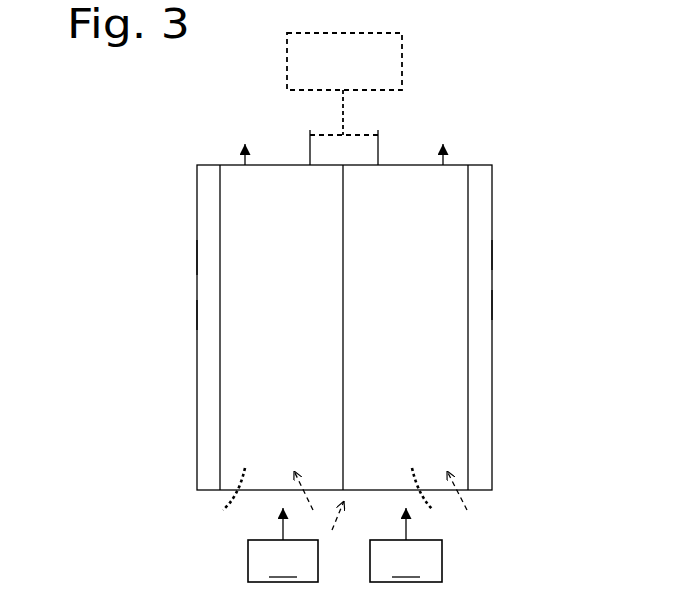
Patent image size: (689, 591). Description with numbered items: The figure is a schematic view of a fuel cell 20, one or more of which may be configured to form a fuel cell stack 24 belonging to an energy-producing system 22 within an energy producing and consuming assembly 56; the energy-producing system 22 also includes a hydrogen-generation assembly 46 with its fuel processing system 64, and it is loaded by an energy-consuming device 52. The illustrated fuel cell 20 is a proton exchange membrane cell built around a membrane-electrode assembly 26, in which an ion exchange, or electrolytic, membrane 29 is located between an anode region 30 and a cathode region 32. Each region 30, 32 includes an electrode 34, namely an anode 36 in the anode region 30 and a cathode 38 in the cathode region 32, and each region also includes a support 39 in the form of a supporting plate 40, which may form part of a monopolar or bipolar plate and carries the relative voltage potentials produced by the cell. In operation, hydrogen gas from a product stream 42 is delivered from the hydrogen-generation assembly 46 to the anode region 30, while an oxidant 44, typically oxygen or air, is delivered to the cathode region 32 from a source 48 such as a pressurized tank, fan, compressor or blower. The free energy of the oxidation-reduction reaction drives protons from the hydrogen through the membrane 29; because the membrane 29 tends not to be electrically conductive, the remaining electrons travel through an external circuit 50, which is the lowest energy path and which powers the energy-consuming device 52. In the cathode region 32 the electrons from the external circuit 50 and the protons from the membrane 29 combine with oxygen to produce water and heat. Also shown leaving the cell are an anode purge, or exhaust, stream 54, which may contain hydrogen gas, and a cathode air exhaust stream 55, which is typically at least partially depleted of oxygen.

The fuel cell 20 is at (146, 246).
The energy-producing system 22 is at (507, 88).
The fuel cell stack 24 is at (101, 194).
The membrane-electrode assembly 26 is at (334, 530).
The membrane 29 is at (343, 290).
The anode region 30 is at (217, 385).
The cathode region 32 is at (478, 390).
The electrode 34 is at (388, 503).
The anode 36 is at (225, 504).
The cathode 38 is at (429, 504).
The support 39 is at (194, 258).
The supporting plate 40 is at (197, 315).
The product stream 42 is at (281, 531).
The oxidant 44 is at (404, 531).
The hydrogen-generation assembly 46 is at (100, 576).
The source of oxygen 48 is at (406, 561).
The external circuit 50 is at (330, 135).
The energy-consuming device 52 is at (402, 62).
The anode purge stream 54 is at (243, 150).
The cathode air exhaust stream 55 is at (447, 152).
The energy producing and consuming assembly 56 is at (161, 91).
The fuel processing system 64 is at (170, 590).